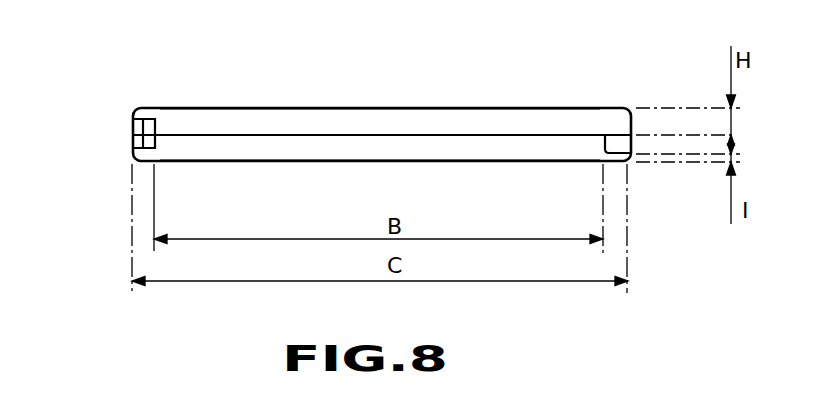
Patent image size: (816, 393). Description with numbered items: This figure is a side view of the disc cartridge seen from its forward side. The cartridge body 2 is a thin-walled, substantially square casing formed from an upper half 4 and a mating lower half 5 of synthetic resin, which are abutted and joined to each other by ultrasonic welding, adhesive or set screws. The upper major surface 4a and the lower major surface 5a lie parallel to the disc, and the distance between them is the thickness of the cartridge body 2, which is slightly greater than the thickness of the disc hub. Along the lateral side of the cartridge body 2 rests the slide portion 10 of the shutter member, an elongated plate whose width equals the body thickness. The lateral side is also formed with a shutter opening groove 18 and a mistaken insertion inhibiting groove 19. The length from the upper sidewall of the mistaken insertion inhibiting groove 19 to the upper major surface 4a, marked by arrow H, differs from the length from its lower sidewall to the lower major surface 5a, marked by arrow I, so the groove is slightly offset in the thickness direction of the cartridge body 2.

The cartridge body 2 is at (530, 107).
The upper half 4 is at (356, 113).
The upper major surface 4a is at (278, 105).
The lower half 5 is at (345, 147).
The lower major surface 5a is at (272, 160).
The slide portion 10 is at (140, 130).
The shutter opening groove 18 is at (140, 140).
The mistaken insertion inhibiting groove 19 is at (613, 150).